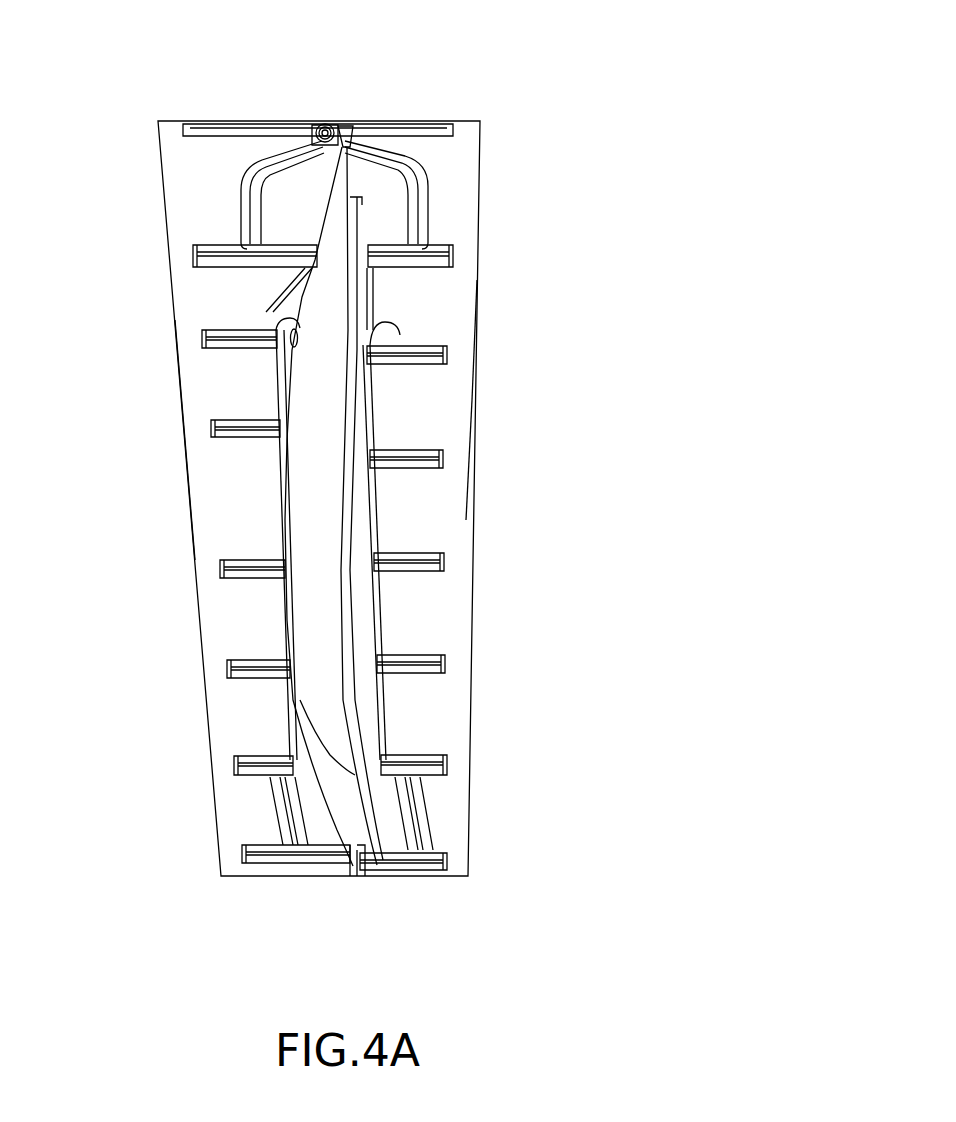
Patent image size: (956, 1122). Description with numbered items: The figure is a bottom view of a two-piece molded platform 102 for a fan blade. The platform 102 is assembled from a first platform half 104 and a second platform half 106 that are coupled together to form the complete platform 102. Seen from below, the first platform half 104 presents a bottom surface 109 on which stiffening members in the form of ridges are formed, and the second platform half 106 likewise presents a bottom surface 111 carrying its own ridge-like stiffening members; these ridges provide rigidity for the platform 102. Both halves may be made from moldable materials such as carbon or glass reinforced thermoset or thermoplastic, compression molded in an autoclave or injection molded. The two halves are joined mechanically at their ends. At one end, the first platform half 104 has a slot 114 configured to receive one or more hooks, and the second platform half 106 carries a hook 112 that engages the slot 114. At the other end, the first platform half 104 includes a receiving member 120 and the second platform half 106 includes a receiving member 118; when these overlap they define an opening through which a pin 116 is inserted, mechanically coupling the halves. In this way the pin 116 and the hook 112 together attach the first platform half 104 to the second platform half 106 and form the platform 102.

The platform 102 is at (500, 78).
The first platform half 104 is at (180, 178).
The second platform half 106 is at (443, 318).
The bottom surface 109 is at (211, 366).
The bottom surface 111 is at (452, 382).
The hook 112 is at (362, 878).
The slot 114 is at (353, 878).
The pin 116 is at (324, 128).
The receiving member 118 is at (347, 127).
The receiving member 120 is at (313, 145).